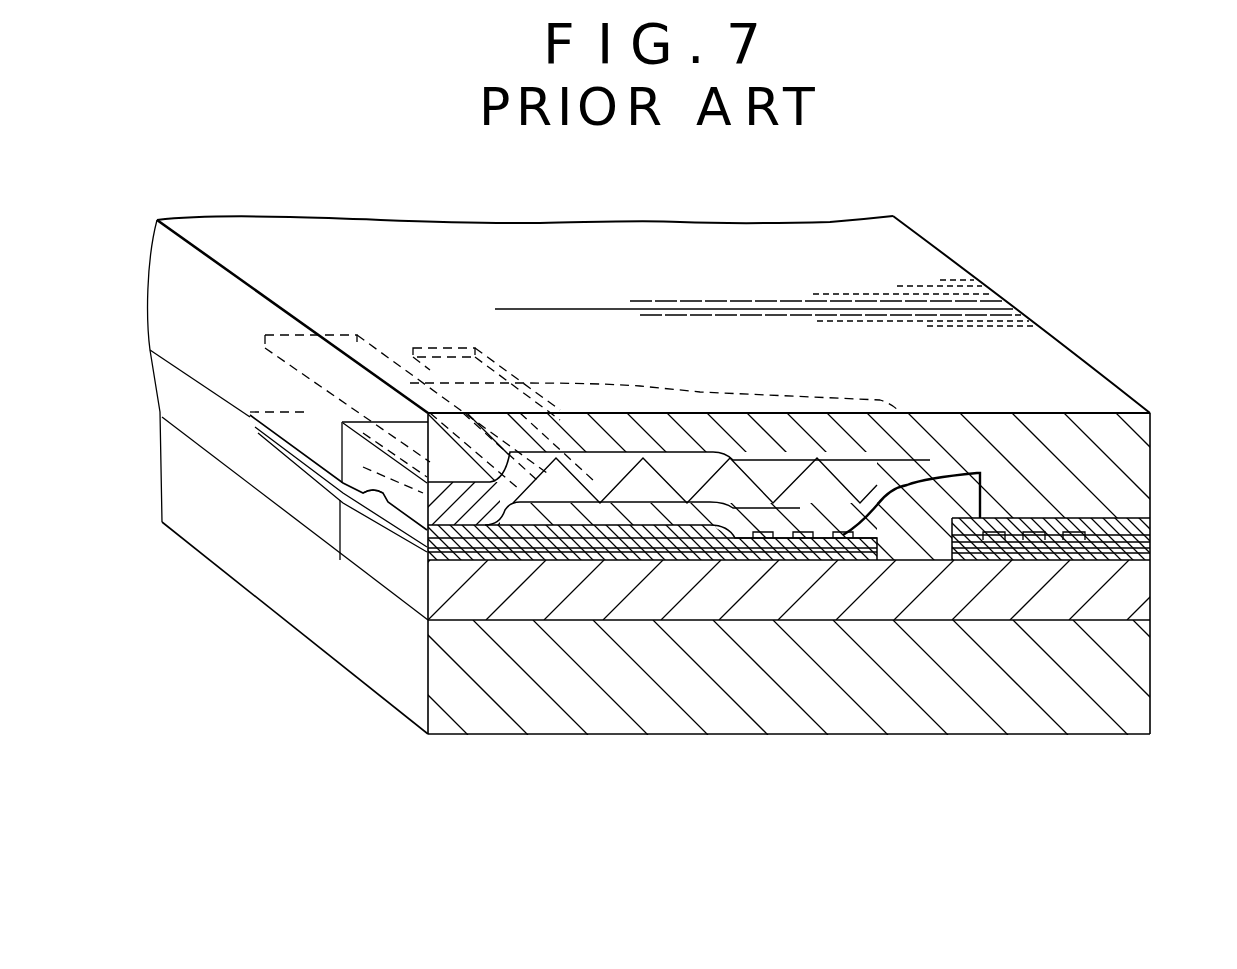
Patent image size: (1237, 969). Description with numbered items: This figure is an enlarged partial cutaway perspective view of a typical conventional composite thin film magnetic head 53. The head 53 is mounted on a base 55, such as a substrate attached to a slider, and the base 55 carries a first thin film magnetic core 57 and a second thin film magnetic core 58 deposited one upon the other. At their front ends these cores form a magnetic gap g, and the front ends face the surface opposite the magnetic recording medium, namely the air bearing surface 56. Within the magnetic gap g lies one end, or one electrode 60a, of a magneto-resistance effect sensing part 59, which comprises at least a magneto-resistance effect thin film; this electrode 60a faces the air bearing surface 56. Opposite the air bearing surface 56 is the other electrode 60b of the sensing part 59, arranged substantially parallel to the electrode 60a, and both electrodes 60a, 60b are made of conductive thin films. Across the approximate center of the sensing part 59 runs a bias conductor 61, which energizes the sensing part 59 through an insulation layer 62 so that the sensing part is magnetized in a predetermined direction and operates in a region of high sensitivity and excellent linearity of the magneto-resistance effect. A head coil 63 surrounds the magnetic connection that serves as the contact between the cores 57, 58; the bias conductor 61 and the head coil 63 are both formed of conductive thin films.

The composite thin film magnetic head 53 is at (1153, 595).
The base 55 is at (1088, 713).
The air bearing surface 56 is at (250, 523).
The first thin film magnetic core 57 is at (880, 607).
The second thin film magnetic core 58 is at (760, 470).
The magneto-resistance effect sensing part 59 is at (687, 562).
The electrode 60a is at (260, 424).
The electrode 60b is at (452, 356).
The bias conductor 61 is at (598, 563).
The insulation layer 62 is at (505, 540).
The head coil 63 is at (847, 532).
The magnetic gap g is at (385, 515).